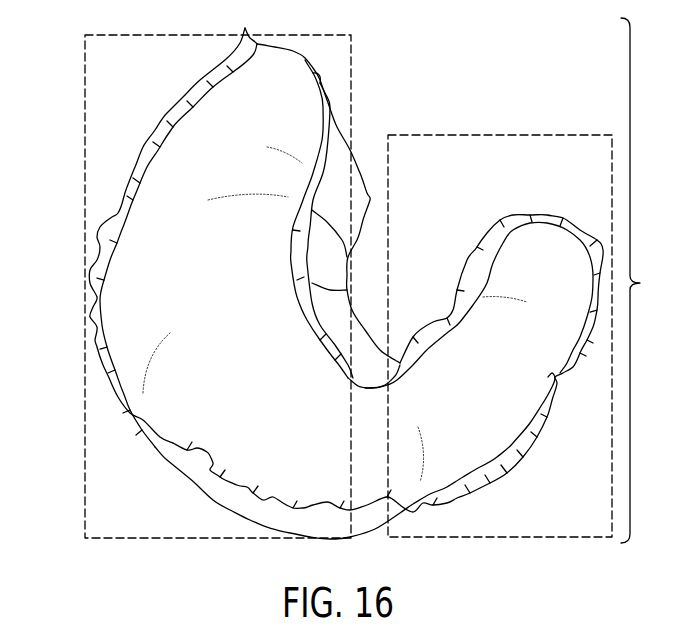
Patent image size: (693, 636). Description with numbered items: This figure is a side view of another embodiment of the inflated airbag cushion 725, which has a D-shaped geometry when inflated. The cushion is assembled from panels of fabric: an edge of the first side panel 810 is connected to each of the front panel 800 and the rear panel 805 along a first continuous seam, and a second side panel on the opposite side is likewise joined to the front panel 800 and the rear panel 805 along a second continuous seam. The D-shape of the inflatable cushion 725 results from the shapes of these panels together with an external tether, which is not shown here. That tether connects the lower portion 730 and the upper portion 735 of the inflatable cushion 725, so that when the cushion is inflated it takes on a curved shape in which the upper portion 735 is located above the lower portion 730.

The inflatable cushion 725 is at (647, 280).
The lower portion 730 is at (548, 133).
The upper portion 735 is at (82, 70).
The front panel 800 is at (370, 200).
The rear panel 805 is at (183, 458).
The first side panel 810 is at (127, 268).